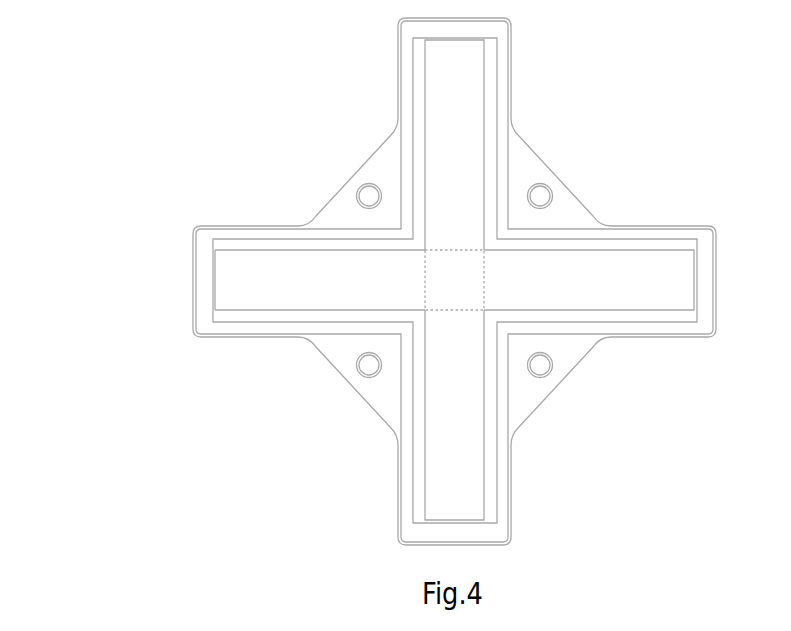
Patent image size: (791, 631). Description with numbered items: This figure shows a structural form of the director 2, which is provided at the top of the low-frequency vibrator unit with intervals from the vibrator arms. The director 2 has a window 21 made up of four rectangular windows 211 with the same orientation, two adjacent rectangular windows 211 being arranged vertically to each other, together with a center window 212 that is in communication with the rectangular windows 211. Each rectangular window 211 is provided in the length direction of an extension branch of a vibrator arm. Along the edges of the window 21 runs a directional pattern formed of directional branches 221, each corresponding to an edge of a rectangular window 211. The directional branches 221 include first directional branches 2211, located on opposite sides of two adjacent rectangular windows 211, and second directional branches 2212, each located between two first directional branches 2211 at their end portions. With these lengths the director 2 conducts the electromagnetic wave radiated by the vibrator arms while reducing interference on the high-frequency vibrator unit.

The director 2 is at (624, 456).
The window 21 is at (637, 53).
The rectangular window 211 is at (468, 120).
The center window 212 is at (468, 270).
The directional branch 221 is at (96, 123).
The first directional branch 2211 is at (405, 63).
The second directional branch 2212 is at (205, 268).